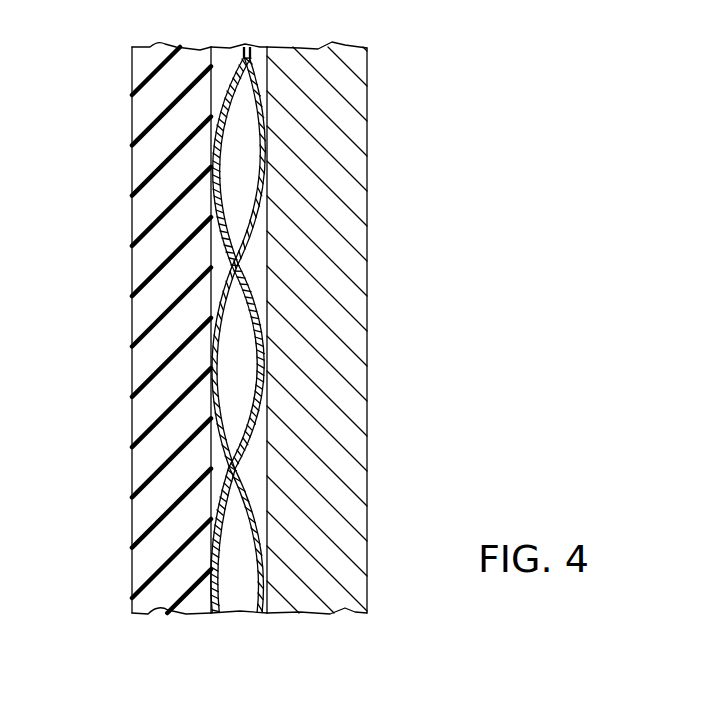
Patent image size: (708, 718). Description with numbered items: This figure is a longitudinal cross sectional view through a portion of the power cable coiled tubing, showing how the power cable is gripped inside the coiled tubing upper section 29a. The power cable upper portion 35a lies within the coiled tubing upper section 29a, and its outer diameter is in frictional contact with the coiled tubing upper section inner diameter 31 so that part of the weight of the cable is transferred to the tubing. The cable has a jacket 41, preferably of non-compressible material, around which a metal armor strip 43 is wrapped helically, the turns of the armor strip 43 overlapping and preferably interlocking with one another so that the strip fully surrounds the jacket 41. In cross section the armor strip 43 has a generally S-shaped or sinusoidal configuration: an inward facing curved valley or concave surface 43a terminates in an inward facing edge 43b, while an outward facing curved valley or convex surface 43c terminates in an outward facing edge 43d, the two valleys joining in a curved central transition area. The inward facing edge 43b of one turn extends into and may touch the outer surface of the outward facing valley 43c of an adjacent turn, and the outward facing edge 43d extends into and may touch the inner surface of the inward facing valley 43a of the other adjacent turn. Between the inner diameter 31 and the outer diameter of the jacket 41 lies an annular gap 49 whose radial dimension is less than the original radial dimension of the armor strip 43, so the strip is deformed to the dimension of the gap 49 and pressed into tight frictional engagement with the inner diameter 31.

The coiled tubing upper section 29a is at (367, 100).
The coiled tubing upper section inner diameter 31 is at (266, 258).
The power cable upper portion 35a is at (131, 481).
The jacket 41 is at (150, 412).
The armor strip 43 is at (239, 249).
The inward facing valley 43a is at (250, 350).
The inward facing edge 43b is at (228, 479).
The outward facing valley 43c is at (225, 149).
The outward facing edge 43d is at (270, 62).
The annular gap 49 is at (210, 620).